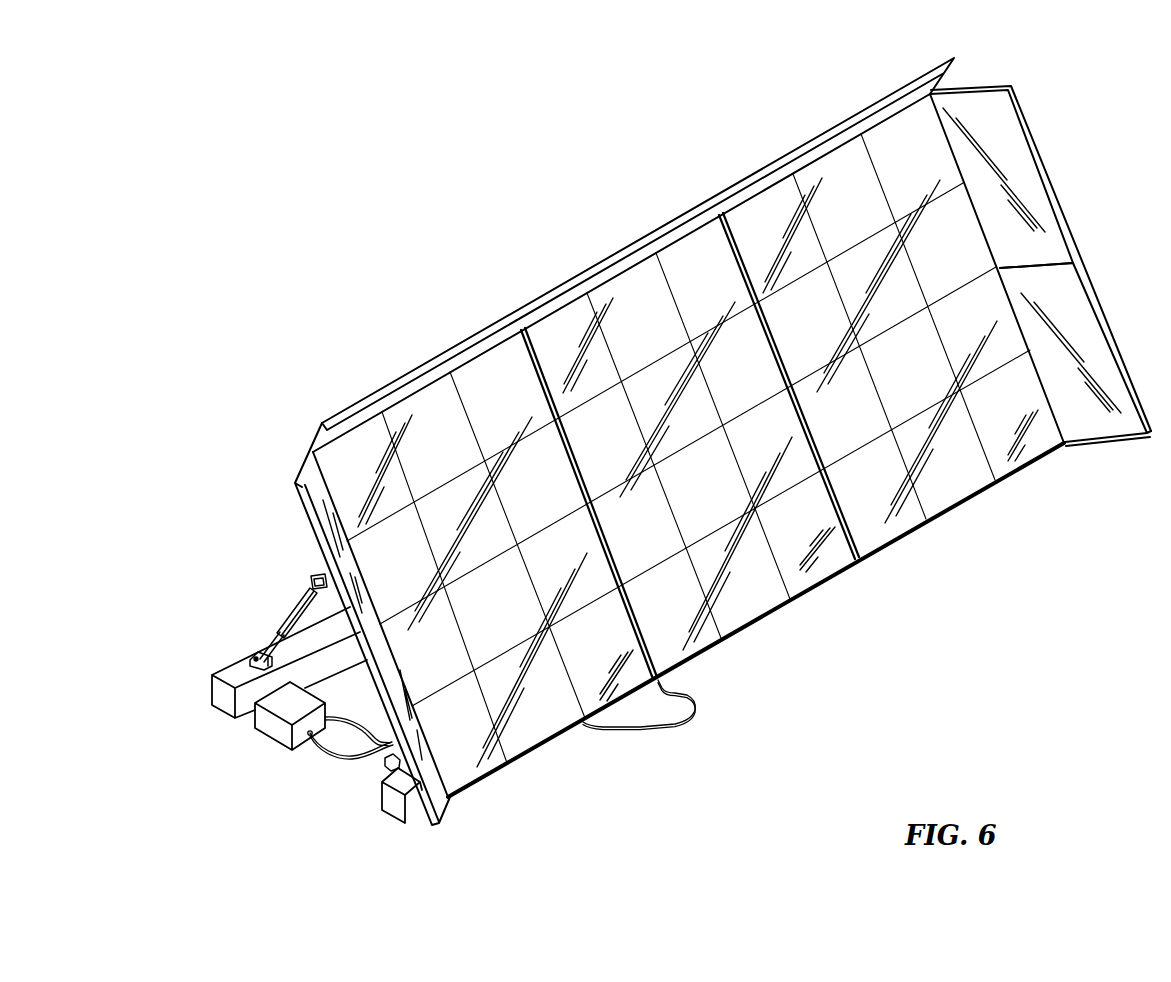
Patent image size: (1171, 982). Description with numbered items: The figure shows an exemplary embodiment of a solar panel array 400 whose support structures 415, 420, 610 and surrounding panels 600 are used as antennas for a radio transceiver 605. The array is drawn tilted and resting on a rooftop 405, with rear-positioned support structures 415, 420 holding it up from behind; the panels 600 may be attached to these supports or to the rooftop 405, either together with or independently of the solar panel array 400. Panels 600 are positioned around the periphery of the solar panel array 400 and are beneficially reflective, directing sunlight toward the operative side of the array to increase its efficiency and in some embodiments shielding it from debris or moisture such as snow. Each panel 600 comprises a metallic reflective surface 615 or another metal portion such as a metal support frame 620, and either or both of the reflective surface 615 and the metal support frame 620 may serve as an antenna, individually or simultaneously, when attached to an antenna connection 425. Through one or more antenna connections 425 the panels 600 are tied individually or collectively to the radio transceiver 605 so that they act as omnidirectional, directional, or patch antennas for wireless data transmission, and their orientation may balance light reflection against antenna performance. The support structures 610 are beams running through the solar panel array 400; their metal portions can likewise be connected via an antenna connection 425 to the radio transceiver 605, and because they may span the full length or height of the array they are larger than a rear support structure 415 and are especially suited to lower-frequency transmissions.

The solar panel array 400 is at (745, 243).
The rooftop 405 is at (205, 697).
The support structure 415 is at (278, 632).
The support structure 420 is at (311, 580).
The antenna connection 425 is at (335, 752).
The panel 600 is at (807, 143).
The radio transceiver 605 is at (270, 727).
The support structure 610 is at (638, 633).
The reflective surface 615 is at (1003, 135).
The metal support frame 620 is at (1063, 262).